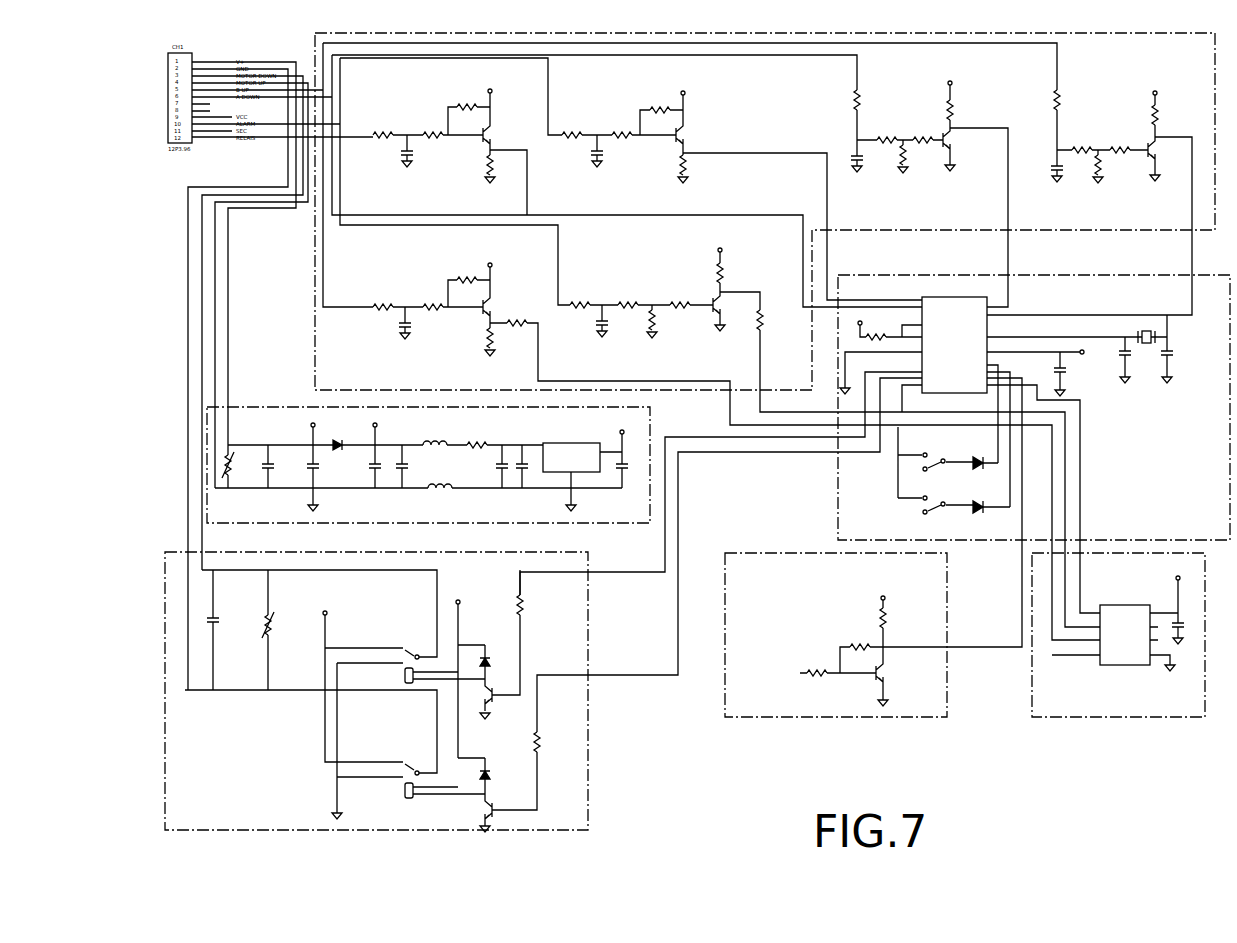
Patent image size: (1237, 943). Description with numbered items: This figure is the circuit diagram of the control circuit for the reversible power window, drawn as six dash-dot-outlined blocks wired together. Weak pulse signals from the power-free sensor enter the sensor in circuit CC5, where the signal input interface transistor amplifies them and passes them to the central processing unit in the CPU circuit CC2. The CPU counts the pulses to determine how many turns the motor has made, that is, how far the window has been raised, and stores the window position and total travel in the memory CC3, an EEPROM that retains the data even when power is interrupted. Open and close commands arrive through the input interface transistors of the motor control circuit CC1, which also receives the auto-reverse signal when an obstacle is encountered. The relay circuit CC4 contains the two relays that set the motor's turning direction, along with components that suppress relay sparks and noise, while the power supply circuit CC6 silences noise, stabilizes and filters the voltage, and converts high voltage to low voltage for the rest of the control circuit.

The motor control circuit CC1 is at (750, 211).
The CPU circuit CC2 is at (1017, 407).
The memory CC3 is at (1109, 635).
The relay circuit CC4 is at (361, 692).
The sensor in circuit CC5 is at (820, 635).
The power supply circuit CC6 is at (413, 465).